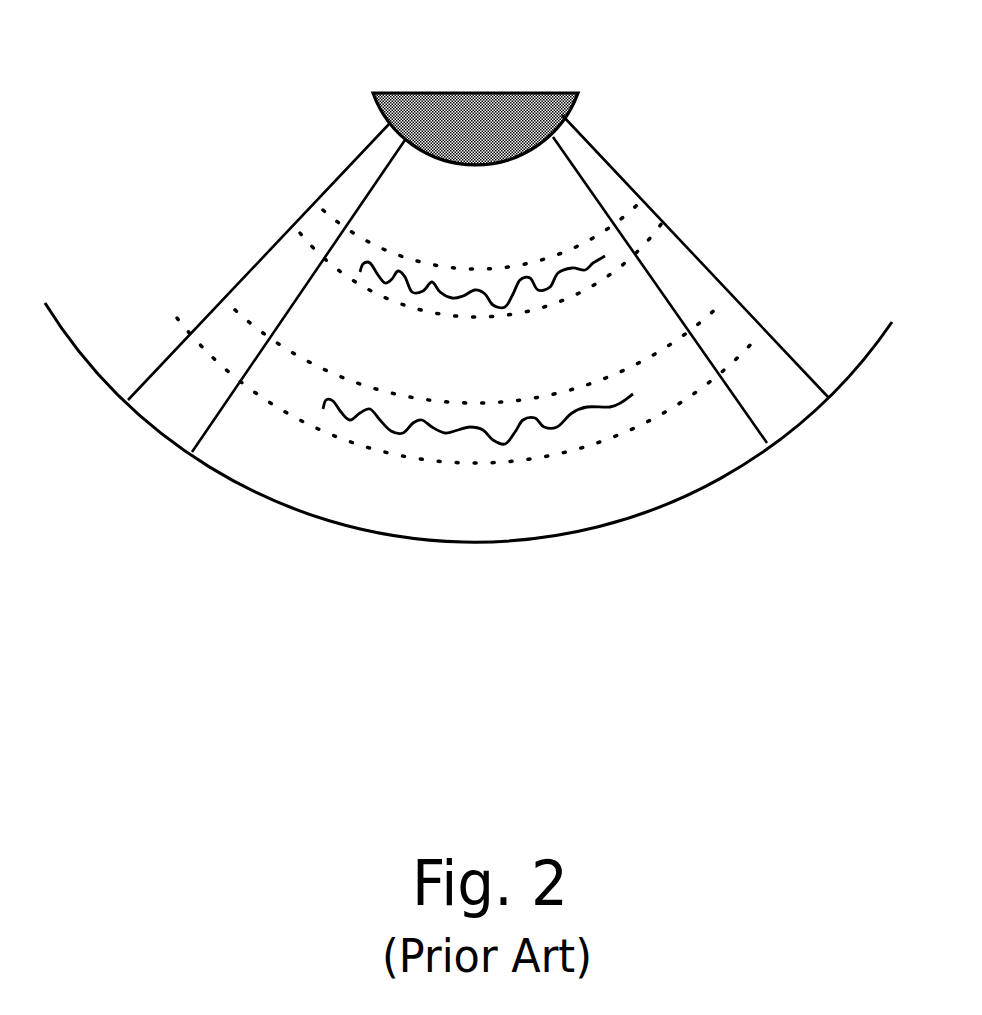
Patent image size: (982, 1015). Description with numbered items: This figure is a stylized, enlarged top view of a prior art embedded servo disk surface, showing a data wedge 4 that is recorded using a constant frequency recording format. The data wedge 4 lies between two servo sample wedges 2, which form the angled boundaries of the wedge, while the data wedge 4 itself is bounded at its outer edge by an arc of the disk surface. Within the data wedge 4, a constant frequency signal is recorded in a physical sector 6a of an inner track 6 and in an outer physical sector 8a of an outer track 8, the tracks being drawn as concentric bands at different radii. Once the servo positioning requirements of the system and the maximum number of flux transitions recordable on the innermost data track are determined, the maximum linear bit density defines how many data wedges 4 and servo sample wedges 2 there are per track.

The servo sample wedges 2 is at (177, 408).
The data wedge 4 is at (478, 507).
The inner track 6 is at (580, 293).
The physical sector 6a is at (470, 280).
The outer track 8 is at (592, 443).
The outer physical sector 8a is at (433, 420).